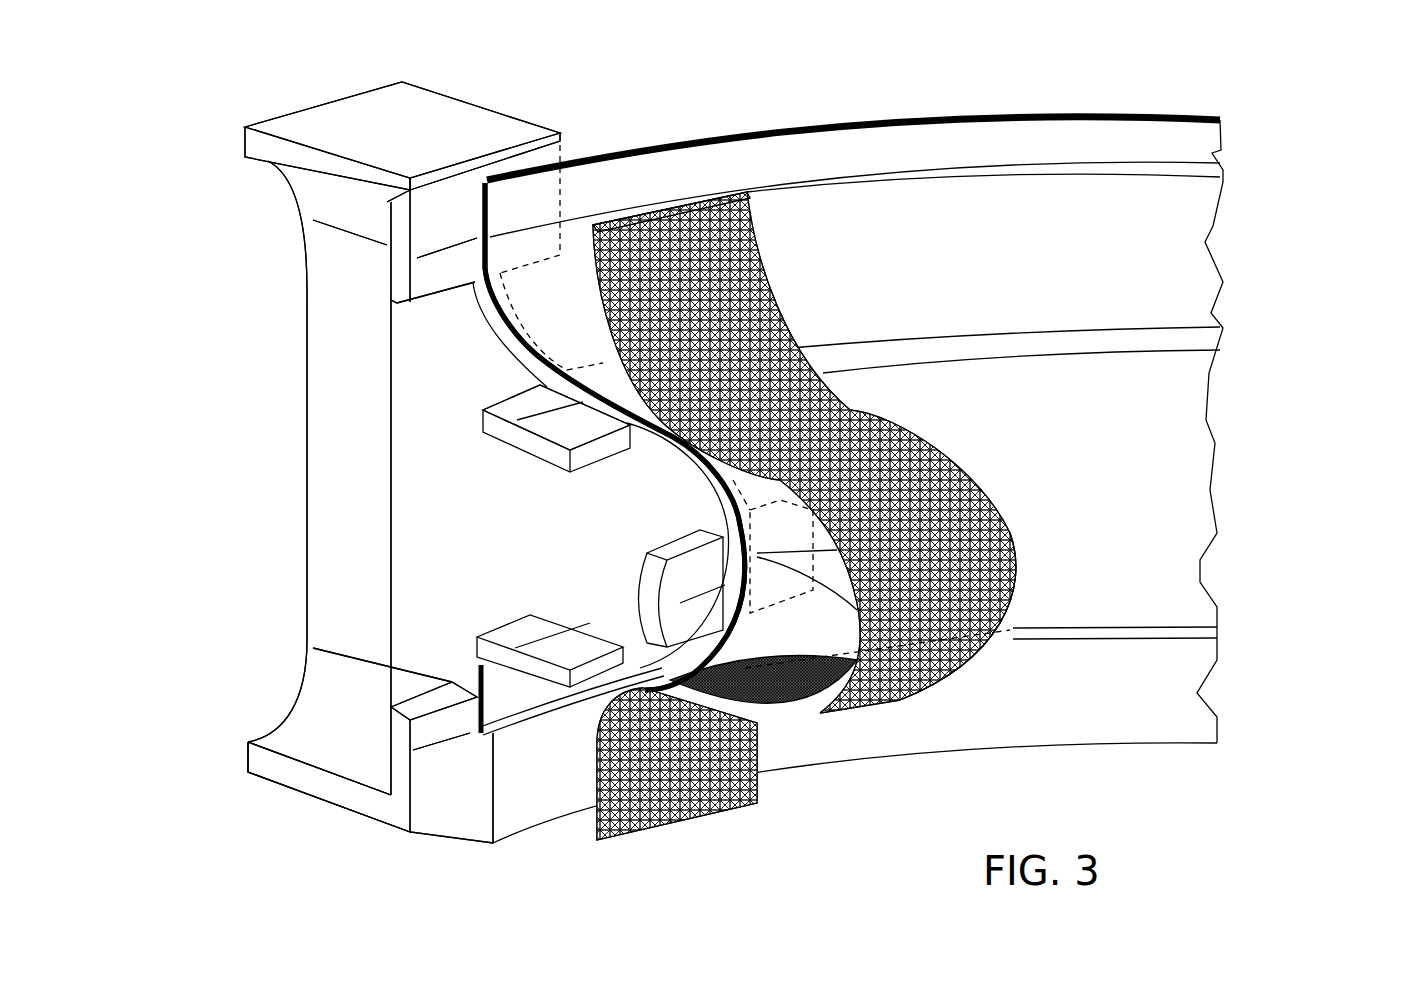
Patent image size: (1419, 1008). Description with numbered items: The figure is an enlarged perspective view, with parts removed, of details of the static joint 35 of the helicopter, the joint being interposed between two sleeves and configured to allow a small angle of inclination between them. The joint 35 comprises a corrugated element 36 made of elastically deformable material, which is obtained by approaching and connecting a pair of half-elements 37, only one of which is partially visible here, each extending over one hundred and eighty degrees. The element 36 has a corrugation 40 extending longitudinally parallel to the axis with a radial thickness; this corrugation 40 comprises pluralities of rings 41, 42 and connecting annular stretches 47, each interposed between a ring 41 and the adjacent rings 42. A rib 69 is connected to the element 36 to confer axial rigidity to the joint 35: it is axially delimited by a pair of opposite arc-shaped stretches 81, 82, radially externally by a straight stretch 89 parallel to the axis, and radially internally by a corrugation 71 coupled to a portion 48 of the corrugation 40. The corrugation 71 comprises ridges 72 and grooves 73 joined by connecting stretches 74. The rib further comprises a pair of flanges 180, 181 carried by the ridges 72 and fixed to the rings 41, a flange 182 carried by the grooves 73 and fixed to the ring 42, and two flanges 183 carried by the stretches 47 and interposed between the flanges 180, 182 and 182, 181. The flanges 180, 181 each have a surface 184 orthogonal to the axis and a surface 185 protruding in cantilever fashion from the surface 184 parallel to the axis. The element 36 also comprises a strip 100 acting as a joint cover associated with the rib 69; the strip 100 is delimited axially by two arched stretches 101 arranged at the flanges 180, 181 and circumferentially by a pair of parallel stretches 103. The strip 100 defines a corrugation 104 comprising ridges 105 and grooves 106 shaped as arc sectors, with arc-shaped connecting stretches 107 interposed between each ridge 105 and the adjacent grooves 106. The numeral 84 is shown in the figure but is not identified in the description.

The joint 35 is at (1125, 818).
The corrugated element 36 is at (939, 460).
The half-element 37 is at (1073, 220).
The corrugation 40 is at (514, 100).
The ring 41 is at (905, 112).
The ring 42 is at (1185, 503).
The connecting annular stretch 47 is at (520, 332).
The portion of the corrugation 48 is at (537, 400).
The rib 69 is at (325, 462).
The corrugation 71 is at (487, 300).
The ridge 72 is at (492, 168).
The groove 73 is at (865, 632).
The connecting stretch 74 is at (612, 415).
The stretch 81 is at (270, 805).
The stretch 82 is at (403, 105).
The flange edge 84 is at (398, 275).
The straight stretch 89 is at (268, 470).
The strip 100 is at (773, 236).
The arched stretch 101 is at (750, 190).
The stretch 103 is at (692, 466).
The corrugation 104 is at (1040, 573).
The ridge 105 is at (660, 210).
The groove 106 is at (1003, 640).
The connecting stretch 107 is at (725, 345).
The flange 180 is at (330, 198).
The flange 181 is at (335, 745).
The flange 182 is at (660, 612).
The flange 183 is at (535, 450).
The surface 184 is at (300, 125).
The surface 185 is at (435, 200).